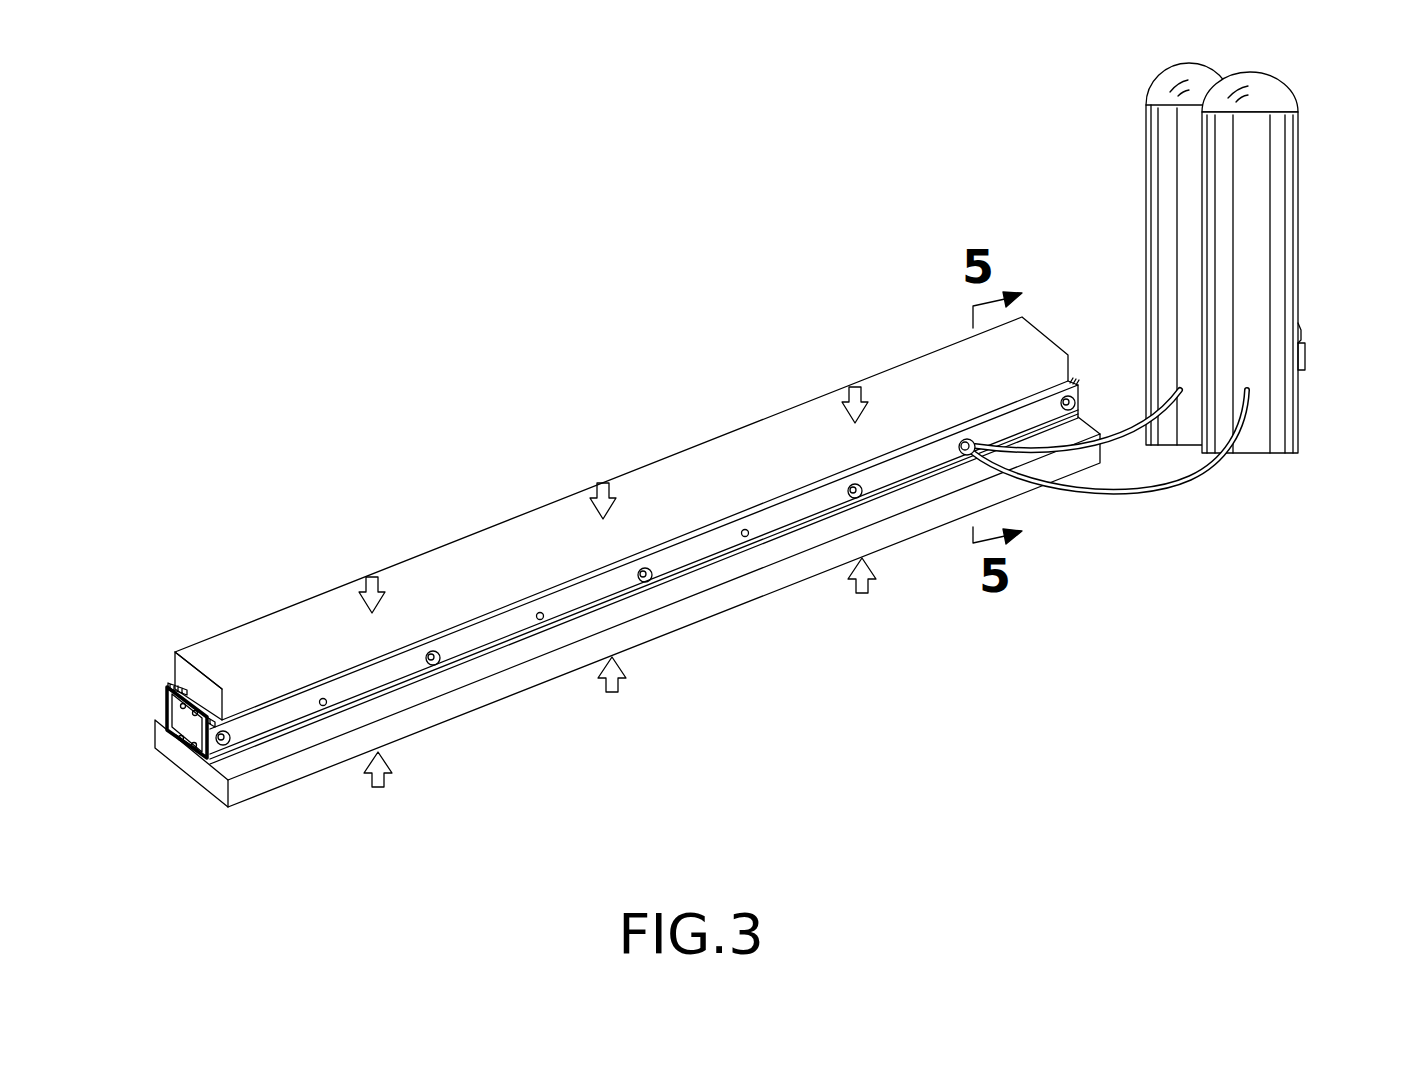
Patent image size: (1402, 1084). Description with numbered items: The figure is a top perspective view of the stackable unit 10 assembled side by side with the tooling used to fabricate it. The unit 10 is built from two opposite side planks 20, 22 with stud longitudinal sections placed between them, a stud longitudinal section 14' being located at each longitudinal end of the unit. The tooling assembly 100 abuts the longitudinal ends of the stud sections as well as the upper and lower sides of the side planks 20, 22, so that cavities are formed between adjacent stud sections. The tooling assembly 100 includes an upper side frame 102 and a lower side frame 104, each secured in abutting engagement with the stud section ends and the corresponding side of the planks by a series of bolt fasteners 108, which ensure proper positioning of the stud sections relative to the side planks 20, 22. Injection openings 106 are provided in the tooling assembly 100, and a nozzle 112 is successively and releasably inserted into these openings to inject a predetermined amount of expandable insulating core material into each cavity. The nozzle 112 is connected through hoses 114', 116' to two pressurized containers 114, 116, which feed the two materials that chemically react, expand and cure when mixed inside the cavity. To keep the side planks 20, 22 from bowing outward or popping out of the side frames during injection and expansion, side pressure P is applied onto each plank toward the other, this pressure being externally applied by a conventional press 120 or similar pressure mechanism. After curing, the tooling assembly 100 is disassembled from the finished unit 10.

The stackable unit 10 is at (130, 675).
The side plank 20 is at (187, 709).
The side plank 22 is at (187, 747).
The stud longitudinal section 14' is at (142, 723).
The tooling assembly 100 is at (715, 470).
The upper side frame 102 is at (166, 700).
The lower side frame 104 is at (490, 634).
The injection openings 106 is at (327, 708).
The bolt fasteners 108 is at (227, 745).
The nozzle 112 is at (957, 455).
The pressurized container 114 is at (1147, 254).
The pressurized container 116 is at (1284, 262).
The hose 114' is at (1077, 402).
The hose 116' is at (1128, 464).
The press 120 is at (727, 442).
The side pressure P is at (365, 578).